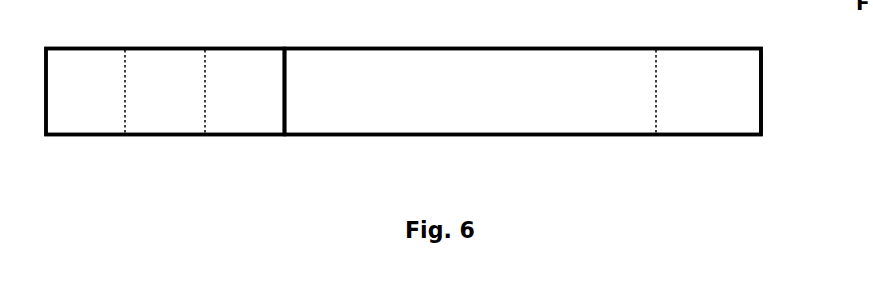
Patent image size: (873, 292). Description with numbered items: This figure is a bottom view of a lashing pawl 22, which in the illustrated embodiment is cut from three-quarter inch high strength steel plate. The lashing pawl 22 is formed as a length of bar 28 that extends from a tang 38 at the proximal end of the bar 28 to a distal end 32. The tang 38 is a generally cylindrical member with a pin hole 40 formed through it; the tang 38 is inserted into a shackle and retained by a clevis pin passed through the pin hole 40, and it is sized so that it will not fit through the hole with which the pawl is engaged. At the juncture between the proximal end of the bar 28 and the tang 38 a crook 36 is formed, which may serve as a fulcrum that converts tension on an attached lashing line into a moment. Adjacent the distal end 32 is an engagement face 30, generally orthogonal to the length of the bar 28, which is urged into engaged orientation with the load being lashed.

The lashing pawl 22 is at (75, 16).
The bar 28 is at (480, 137).
The engagement face 30 is at (655, 123).
The distal end 32 is at (763, 111).
The crook 36 is at (287, 118).
The tang 38 is at (53, 136).
The pin hole 40 is at (125, 119).